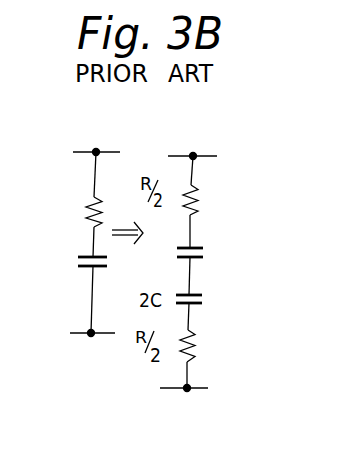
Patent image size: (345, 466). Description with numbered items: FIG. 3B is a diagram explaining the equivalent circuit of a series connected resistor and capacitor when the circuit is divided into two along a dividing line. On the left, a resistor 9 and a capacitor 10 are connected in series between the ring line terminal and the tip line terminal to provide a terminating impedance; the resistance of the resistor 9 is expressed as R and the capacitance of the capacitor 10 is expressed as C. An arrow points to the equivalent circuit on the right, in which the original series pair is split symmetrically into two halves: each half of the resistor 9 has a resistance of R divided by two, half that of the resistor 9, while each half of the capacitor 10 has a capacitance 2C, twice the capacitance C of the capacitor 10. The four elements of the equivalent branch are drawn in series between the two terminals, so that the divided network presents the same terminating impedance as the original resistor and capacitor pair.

The resistor 9 is at (75, 193).
The capacitor 10 is at (72, 278).
The resistance of the resistor R is at (59, 205).
The capacitance of the capacitor C is at (78, 263).
The capacitance twice that of the capacitor 2C is at (171, 255).